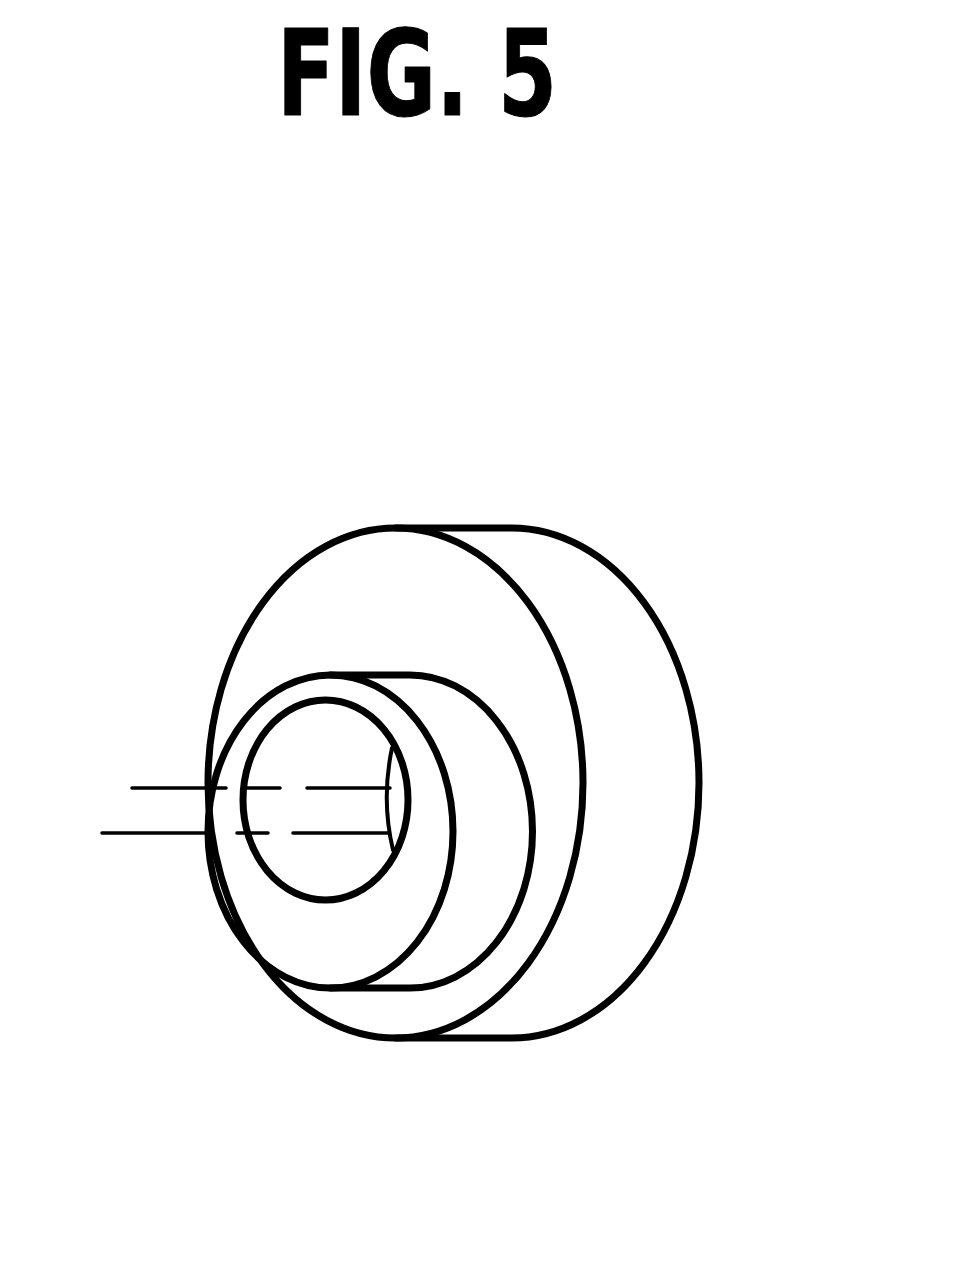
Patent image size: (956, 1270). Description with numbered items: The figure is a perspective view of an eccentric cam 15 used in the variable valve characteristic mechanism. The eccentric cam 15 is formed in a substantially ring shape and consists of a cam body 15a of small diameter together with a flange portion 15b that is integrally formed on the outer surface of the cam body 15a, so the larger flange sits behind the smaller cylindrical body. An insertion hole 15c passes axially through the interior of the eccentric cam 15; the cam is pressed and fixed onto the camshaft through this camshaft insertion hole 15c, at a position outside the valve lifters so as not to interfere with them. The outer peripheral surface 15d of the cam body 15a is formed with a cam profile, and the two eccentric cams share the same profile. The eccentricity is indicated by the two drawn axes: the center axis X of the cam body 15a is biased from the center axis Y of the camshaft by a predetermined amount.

The eccentric cam 15 is at (581, 542).
The cam body 15a is at (358, 942).
The flange portion 15b is at (671, 801).
The insertion hole 15c is at (310, 855).
The outer peripheral surface 15d is at (498, 890).
The center axis of cam body X is at (127, 833).
The center axis of camshaft Y is at (177, 788).